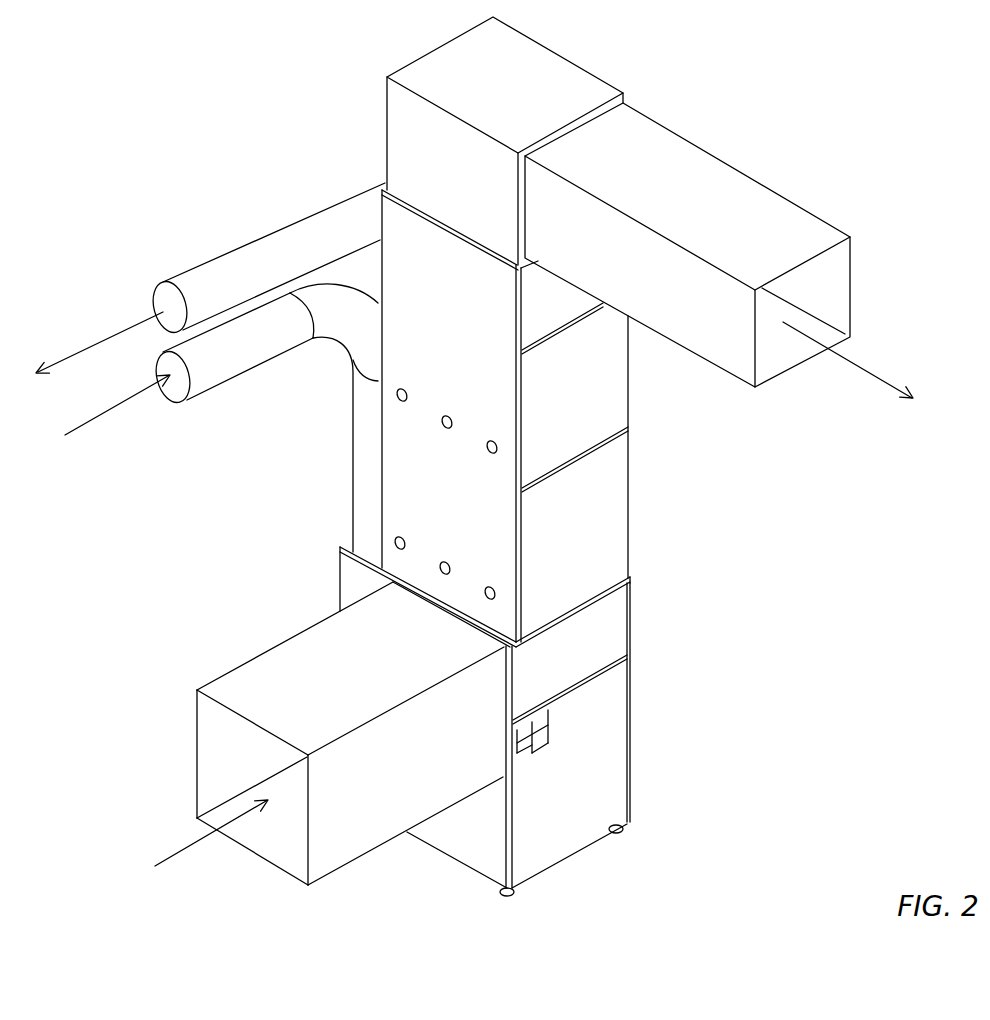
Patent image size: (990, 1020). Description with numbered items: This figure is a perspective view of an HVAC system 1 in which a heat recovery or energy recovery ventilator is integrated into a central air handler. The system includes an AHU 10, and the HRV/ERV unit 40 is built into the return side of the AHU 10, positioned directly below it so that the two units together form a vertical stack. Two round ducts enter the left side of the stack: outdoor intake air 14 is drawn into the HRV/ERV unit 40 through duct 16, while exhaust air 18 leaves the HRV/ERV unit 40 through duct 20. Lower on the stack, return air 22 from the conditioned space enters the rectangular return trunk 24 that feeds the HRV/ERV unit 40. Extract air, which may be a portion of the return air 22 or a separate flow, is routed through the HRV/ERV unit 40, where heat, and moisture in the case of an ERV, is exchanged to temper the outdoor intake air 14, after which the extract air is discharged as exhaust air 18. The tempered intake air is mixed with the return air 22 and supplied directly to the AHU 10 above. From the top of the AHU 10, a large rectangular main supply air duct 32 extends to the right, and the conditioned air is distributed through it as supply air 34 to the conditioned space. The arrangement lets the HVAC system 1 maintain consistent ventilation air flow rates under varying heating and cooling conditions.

The HVAC system 1 is at (725, 659).
The AHU 10 is at (612, 491).
The outdoor intake air 14 is at (100, 427).
The duct 16 is at (228, 365).
The exhaust air 18 is at (85, 335).
The duct 20 is at (247, 253).
The return air 22 is at (183, 864).
The return trunk 24 is at (240, 683).
The main supply air duct 32 is at (733, 183).
The supply air 34 is at (877, 373).
The HRV/ERV unit 40 is at (610, 783).